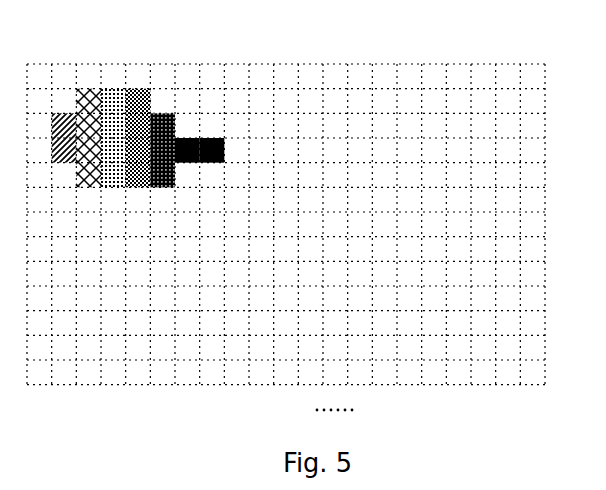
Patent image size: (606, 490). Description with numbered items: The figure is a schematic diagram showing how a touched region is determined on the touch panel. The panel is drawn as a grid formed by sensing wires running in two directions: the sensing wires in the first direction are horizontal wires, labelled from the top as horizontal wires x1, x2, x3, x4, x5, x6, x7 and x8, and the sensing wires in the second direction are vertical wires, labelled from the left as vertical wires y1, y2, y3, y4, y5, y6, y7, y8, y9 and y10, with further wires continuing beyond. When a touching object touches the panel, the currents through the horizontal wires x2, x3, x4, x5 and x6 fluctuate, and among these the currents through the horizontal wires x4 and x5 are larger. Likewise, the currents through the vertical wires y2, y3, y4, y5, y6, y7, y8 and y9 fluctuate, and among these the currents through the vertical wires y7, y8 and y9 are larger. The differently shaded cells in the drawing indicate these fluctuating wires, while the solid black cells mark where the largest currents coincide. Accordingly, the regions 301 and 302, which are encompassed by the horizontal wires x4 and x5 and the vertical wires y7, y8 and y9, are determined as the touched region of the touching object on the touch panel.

The region 301 is at (187, 138).
The region 302 is at (210, 138).
The horizontal wire x1 is at (537, 64).
The horizontal wire x2 is at (537, 89).
The horizontal wire x3 is at (537, 113).
The horizontal wire x4 is at (537, 138).
The horizontal wire x5 is at (537, 163).
The horizontal wire x6 is at (537, 187).
The horizontal wire x7 is at (537, 212).
The horizontal wire x8 is at (537, 237).
The vertical wire y1 is at (27, 372).
The vertical wire y2 is at (52, 372).
The vertical wire y3 is at (76, 372).
The vertical wire y4 is at (101, 372).
The vertical wire y5 is at (126, 372).
The vertical wire y6 is at (150, 372).
The vertical wire y7 is at (175, 372).
The vertical wire y8 is at (200, 372).
The vertical wire y9 is at (224, 372).
The vertical wire y10 is at (249, 372).